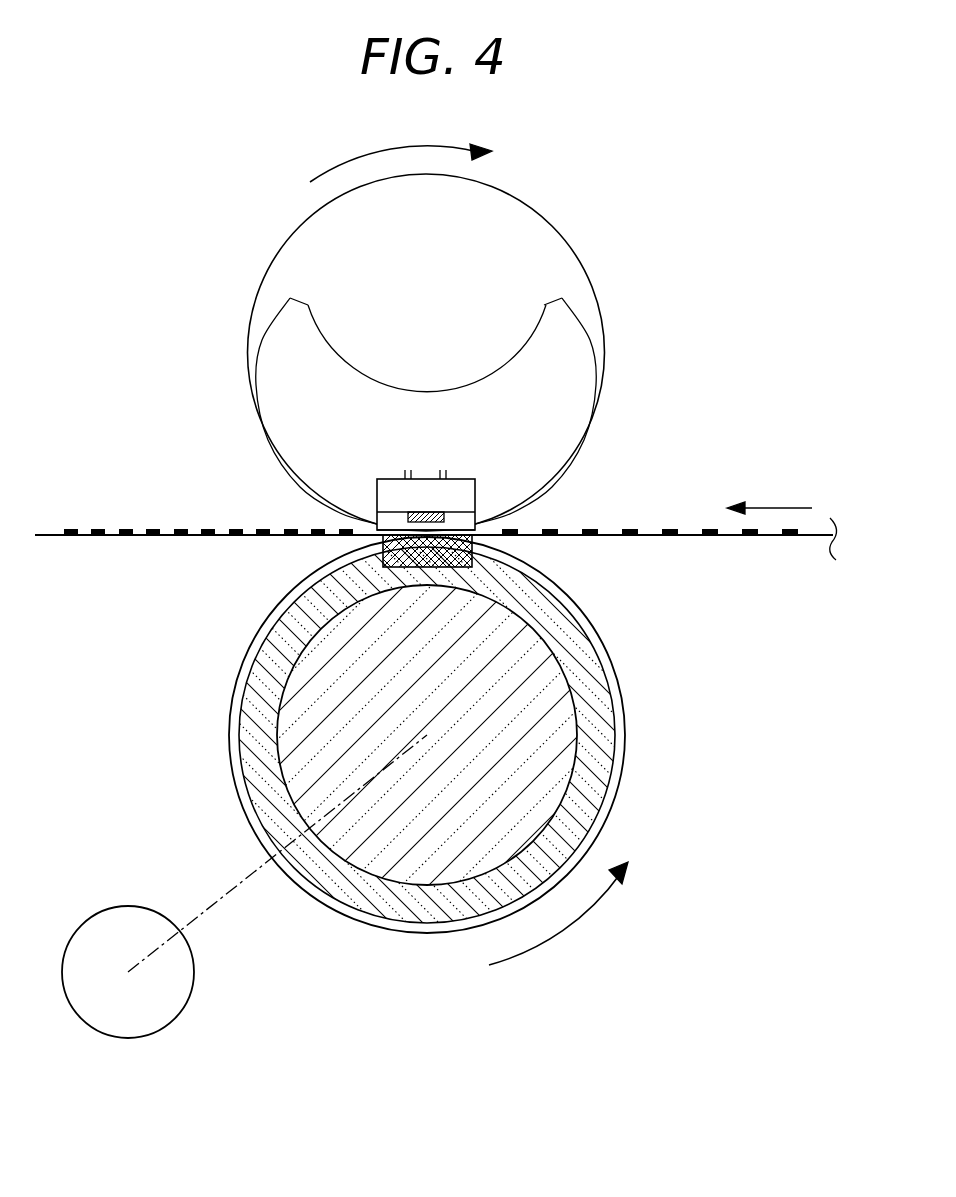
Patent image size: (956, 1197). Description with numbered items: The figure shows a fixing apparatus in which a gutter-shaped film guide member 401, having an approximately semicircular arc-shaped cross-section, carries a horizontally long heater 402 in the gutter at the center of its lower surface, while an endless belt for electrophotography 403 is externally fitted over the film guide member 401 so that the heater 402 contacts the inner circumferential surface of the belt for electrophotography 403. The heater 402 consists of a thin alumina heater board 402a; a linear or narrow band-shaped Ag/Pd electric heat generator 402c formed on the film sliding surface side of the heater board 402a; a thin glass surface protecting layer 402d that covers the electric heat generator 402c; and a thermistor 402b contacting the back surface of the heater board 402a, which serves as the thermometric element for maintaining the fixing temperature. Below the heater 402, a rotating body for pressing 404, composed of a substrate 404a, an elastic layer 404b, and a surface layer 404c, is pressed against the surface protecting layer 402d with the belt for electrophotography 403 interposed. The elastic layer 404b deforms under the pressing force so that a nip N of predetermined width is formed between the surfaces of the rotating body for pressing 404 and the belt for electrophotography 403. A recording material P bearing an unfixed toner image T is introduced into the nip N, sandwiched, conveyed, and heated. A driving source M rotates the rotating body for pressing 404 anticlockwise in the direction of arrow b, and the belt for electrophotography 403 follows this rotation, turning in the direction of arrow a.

The film guide member 401 is at (596, 385).
The heater 402 is at (333, 349).
The heater board 402a is at (463, 490).
The thermistor 402b is at (436, 472).
The electric heat generator 402c is at (415, 510).
The surface protecting layer 402d is at (392, 515).
The belt for electrophotography 403 is at (576, 250).
The rotating body for pressing 404 is at (728, 665).
The substrate 404a is at (555, 690).
The elastic layer 404b is at (598, 722).
The surface layer 404c is at (622, 752).
The nip N is at (379, 537).
The unfixed toner image T is at (600, 532).
The recording material P is at (690, 532).
The driving source M is at (130, 907).
The arrow a is at (401, 153).
The arrow b is at (558, 913).